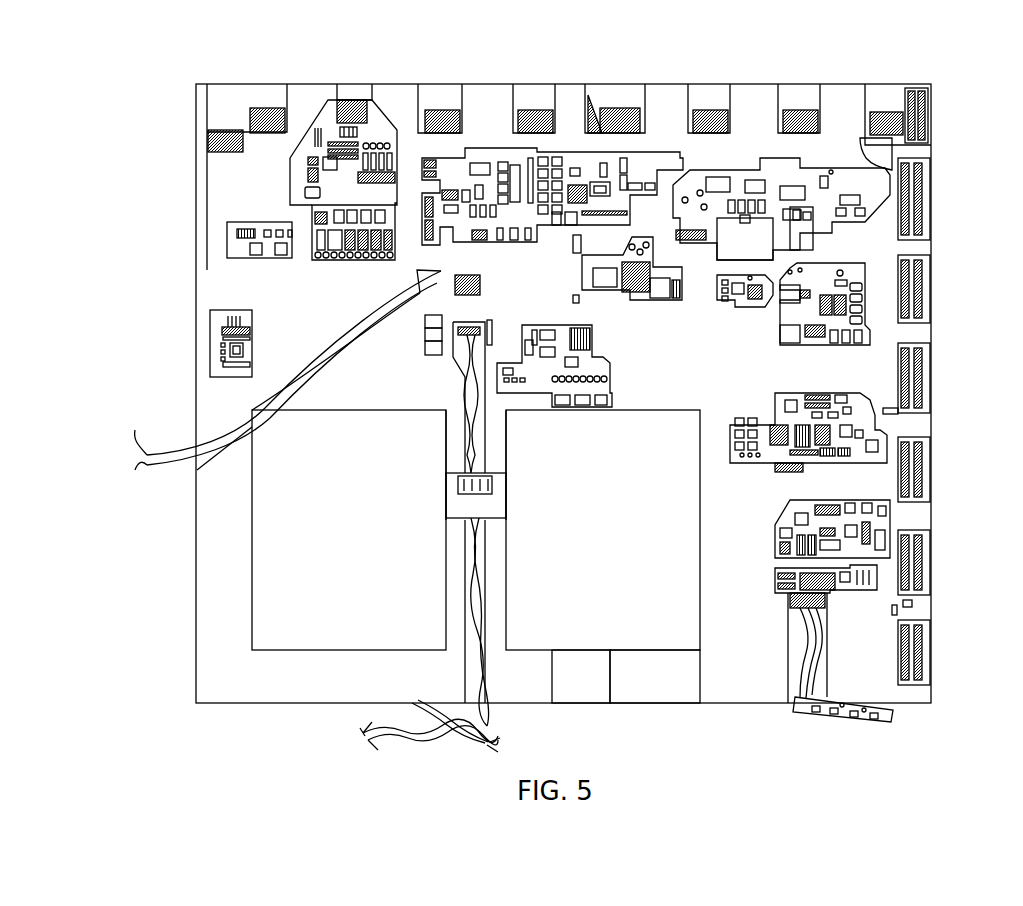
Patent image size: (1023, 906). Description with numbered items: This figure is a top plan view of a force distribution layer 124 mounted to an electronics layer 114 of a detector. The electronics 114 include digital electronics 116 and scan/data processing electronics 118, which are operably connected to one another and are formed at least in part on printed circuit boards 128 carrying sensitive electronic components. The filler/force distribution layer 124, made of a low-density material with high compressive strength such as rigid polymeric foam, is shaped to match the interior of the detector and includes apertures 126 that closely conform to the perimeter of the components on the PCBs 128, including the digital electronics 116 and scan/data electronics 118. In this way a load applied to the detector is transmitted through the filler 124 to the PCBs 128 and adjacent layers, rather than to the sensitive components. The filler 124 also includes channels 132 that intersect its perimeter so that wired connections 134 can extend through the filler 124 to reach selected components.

The electronics 114 is at (709, 65).
The digital electronics 116 is at (483, 148).
The scan/data processing electronics 118 is at (927, 84).
The force distribution layer 124 is at (760, 100).
The apertures 126 is at (300, 190).
The printed circuit boards 128 is at (923, 388).
The channels 132 is at (228, 405).
The wired connections 134 is at (162, 448).